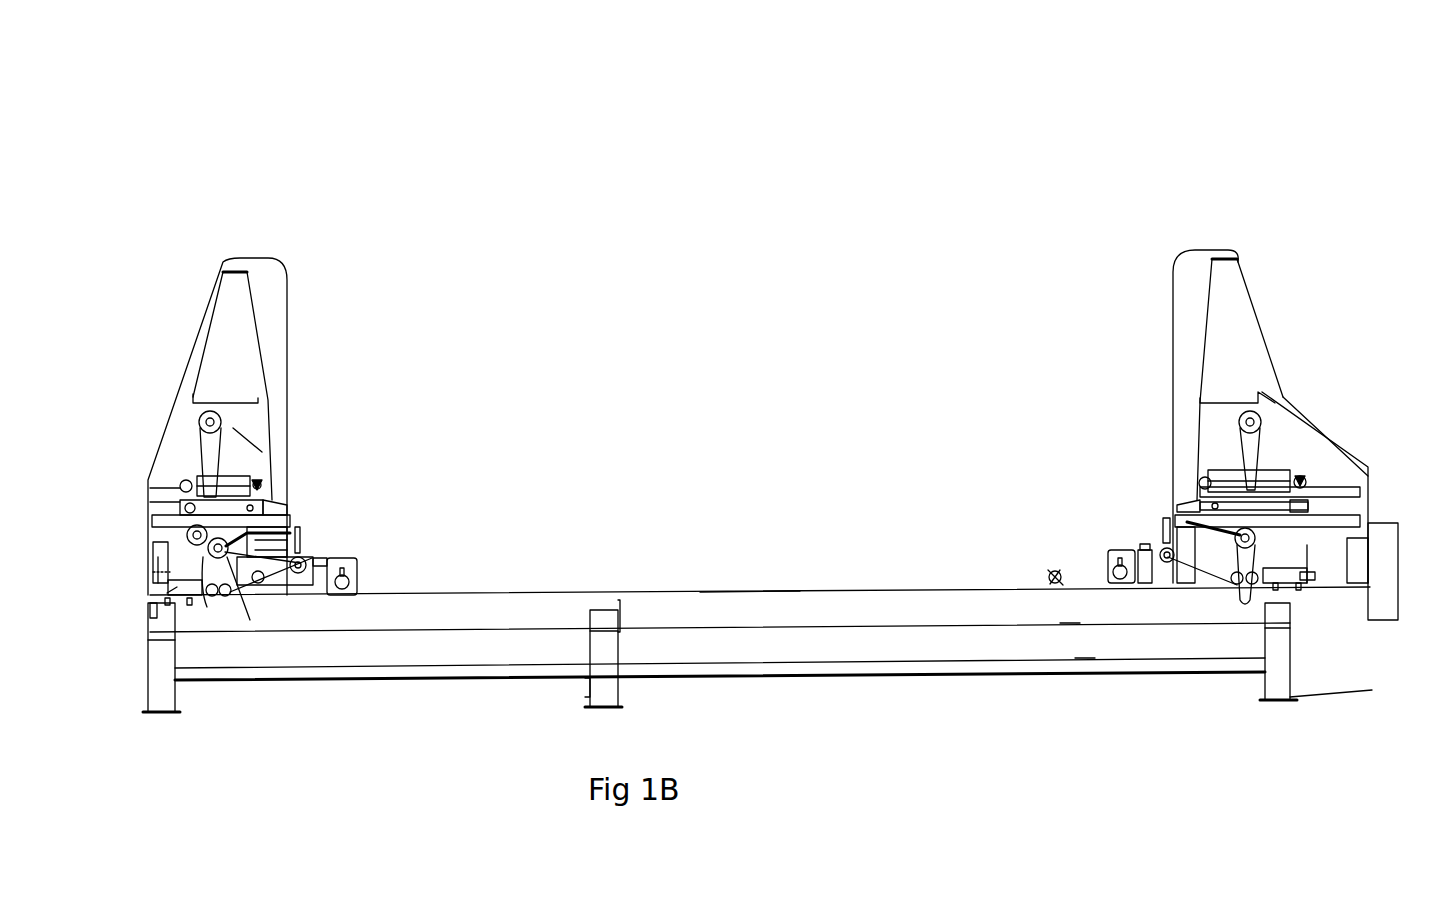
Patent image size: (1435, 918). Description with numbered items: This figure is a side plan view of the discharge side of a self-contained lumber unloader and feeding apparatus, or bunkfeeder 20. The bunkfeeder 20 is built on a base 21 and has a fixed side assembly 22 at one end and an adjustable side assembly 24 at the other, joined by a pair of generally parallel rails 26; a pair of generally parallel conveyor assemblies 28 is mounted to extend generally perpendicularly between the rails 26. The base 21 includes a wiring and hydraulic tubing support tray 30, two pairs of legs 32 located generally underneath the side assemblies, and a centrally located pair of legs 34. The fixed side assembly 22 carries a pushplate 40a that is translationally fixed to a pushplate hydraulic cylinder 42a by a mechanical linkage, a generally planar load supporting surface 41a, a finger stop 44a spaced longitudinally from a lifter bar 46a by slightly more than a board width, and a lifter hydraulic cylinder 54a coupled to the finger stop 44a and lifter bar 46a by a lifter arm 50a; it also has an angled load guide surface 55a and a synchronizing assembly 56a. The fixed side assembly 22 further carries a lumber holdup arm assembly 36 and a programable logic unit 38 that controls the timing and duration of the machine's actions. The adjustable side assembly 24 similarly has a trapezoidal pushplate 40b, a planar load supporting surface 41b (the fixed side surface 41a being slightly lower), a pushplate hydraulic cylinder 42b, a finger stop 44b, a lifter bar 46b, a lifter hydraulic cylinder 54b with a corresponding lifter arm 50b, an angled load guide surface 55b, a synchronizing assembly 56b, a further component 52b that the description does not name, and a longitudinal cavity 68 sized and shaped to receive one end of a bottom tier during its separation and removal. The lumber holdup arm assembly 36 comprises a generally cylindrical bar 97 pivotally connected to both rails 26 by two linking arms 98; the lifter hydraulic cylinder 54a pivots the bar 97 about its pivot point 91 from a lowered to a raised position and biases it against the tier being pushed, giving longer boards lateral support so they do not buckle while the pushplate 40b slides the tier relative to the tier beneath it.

The bunkfeeder 20 is at (775, 165).
The base 21 is at (742, 585).
The fixed side assembly 22 is at (1242, 234).
The adjustable side assembly 24 is at (243, 250).
The rails 26 is at (770, 588).
The conveyor assemblies 28 is at (360, 562).
The wiring and hydraulic tubing support tray 30 is at (373, 680).
The legs 32 is at (162, 697).
The centrally located pair of legs 34 is at (607, 695).
The lumber holdup arm assembly 36 is at (1048, 577).
The programable logic unit 38 is at (1383, 543).
The pushplate 40a is at (1190, 503).
The trapezoidal pushplate 40b is at (285, 505).
The planar load supporting surface 41a is at (1178, 508).
The planar load supporting surface 41b is at (283, 525).
The pushplate hydraulic cylinder 42a is at (1280, 468).
The pushplate hydraulic cylinder 42b is at (258, 455).
The finger stop 44a is at (1163, 527).
The finger stop 44b is at (300, 530).
The lifter bar 46a is at (1160, 548).
The lifter bar 46b is at (302, 562).
The lifter arm 50a is at (1205, 565).
The link 50b is at (247, 580).
The pulley 52b is at (195, 540).
The lifter hydraulic cylinder 54a is at (1295, 590).
The lifter hydraulic cylinder 54b is at (150, 598).
The angled load guide surface 55a is at (1203, 312).
The angled load guide surface 55b is at (255, 318).
The synchronizing assembly 56a is at (1257, 443).
The synchronizing assembly 56b is at (223, 413).
The longitudinal cavity 68 is at (300, 503).
The pivot point 91 is at (1085, 607).
The cylindrical bar 97 is at (1004, 564).
The linking arms 98 is at (1072, 597).